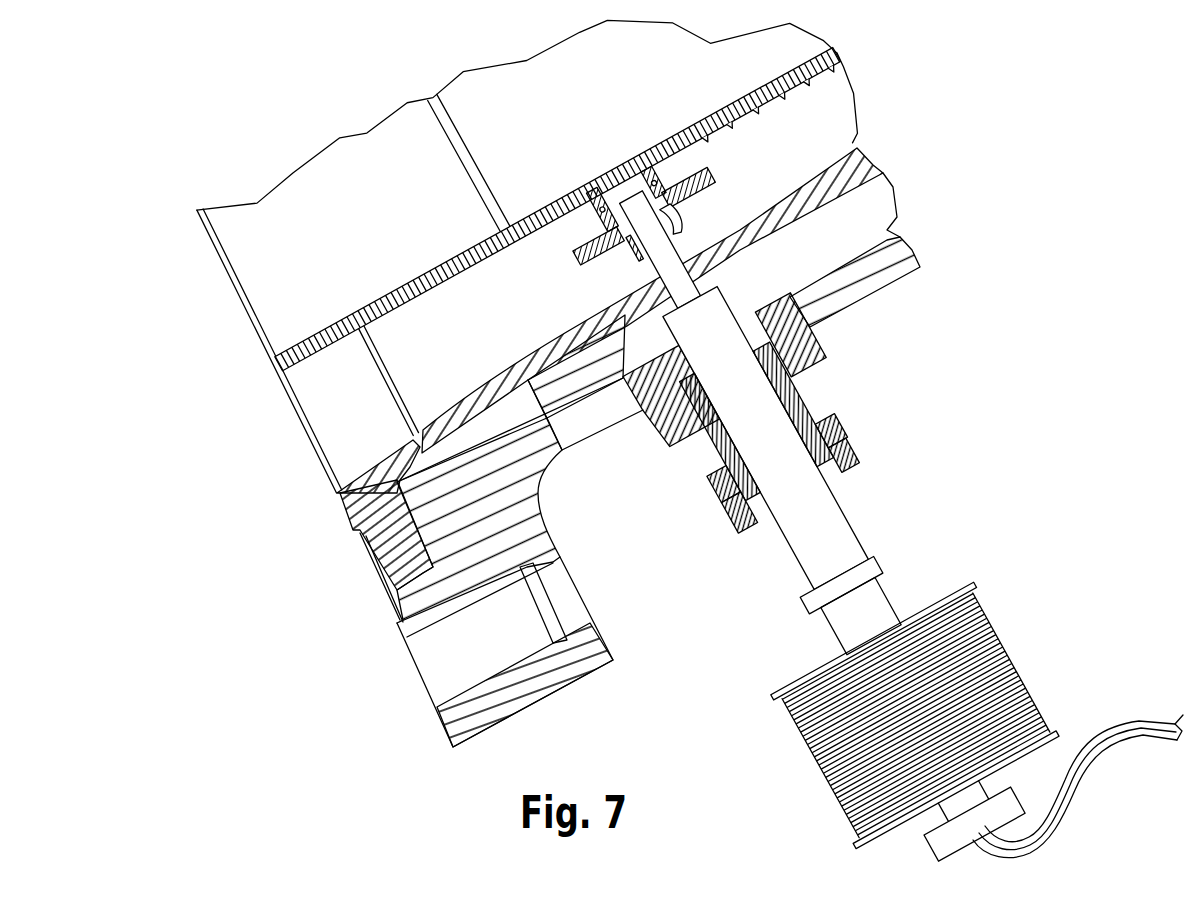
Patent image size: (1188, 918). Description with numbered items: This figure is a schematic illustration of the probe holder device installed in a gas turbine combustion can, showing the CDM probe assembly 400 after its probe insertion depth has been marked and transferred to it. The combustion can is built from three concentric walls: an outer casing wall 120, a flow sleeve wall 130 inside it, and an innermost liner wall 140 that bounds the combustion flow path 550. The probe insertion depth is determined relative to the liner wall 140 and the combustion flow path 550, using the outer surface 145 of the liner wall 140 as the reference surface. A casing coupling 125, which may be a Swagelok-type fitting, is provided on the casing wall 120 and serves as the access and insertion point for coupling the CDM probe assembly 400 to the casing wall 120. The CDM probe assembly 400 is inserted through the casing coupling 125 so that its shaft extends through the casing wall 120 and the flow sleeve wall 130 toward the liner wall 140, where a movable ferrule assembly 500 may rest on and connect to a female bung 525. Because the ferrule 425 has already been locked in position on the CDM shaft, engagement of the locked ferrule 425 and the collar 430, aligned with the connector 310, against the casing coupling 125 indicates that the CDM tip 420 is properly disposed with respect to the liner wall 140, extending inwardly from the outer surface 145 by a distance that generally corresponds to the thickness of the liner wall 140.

The casing wall 120 is at (887, 240).
The casing coupling 125 is at (830, 347).
The flow sleeve wall 130 is at (853, 143).
The liner wall 140 is at (843, 67).
The outer surface 145 is at (683, 220).
The connector 310 is at (708, 473).
The CDM probe assembly 400 is at (1021, 557).
The CDM tip 420 is at (578, 247).
The ferrule 425 is at (840, 431).
The collar 430 is at (840, 458).
The movable ferrule assembly 500 is at (692, 176).
The female bung 525 is at (692, 122).
The combustion flow path 550 is at (529, 127).